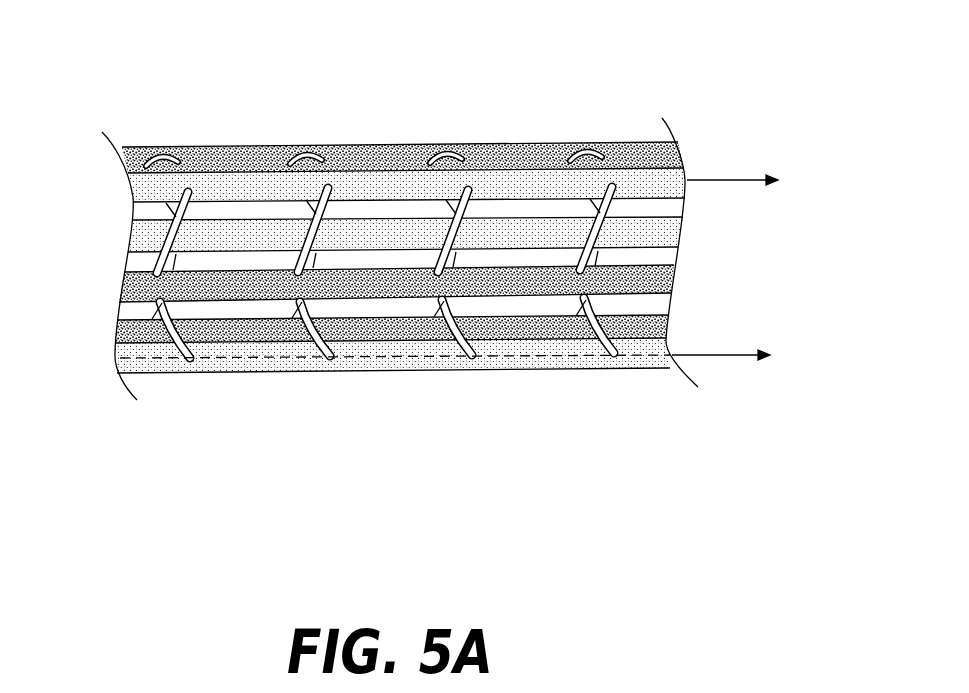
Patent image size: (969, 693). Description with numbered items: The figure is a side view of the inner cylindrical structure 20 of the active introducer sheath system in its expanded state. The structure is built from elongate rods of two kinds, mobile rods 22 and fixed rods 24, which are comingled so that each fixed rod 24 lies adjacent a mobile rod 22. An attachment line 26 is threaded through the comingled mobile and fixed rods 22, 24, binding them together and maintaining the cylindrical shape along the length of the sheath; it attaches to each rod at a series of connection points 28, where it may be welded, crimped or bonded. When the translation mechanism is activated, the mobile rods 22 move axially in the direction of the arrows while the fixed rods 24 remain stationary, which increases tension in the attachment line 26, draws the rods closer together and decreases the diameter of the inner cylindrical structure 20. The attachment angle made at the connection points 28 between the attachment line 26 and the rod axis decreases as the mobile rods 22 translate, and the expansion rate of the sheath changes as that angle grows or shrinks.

The inner cylindrical structure 20 is at (524, 105).
The mobile rod 22 is at (141, 190).
The fixed rod 24 is at (124, 156).
The attachment line 26 is at (304, 148).
The connection point 28 is at (334, 358).